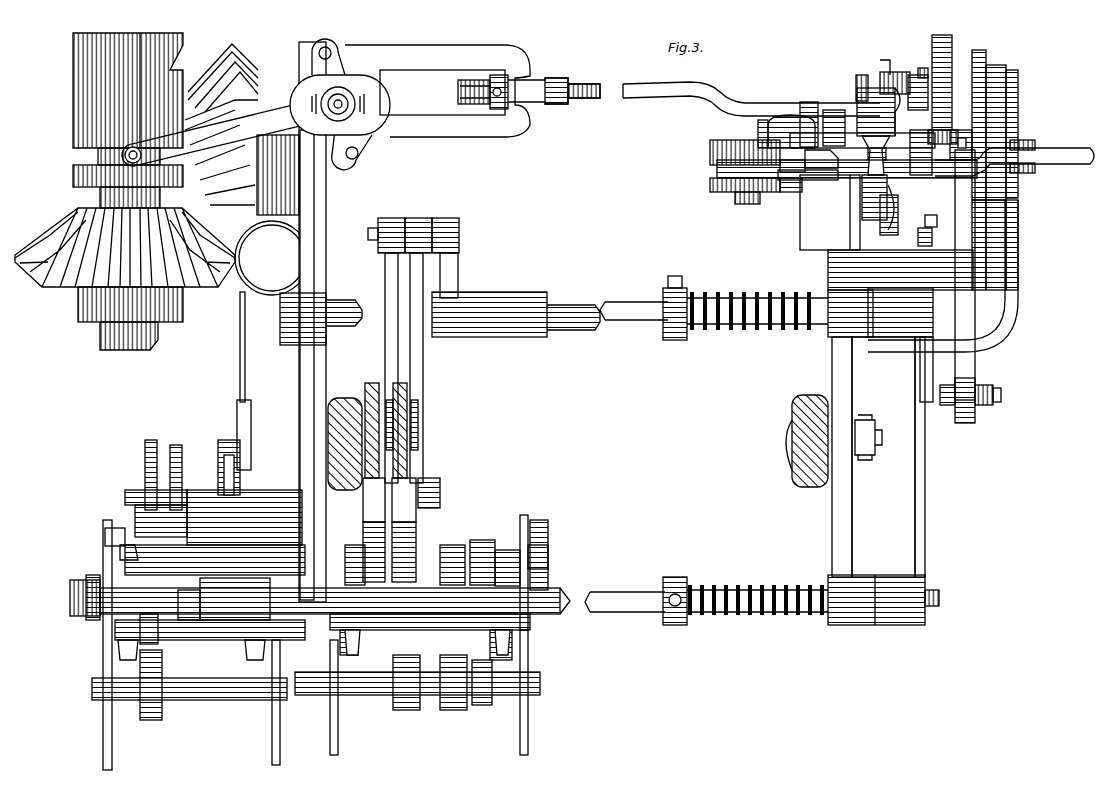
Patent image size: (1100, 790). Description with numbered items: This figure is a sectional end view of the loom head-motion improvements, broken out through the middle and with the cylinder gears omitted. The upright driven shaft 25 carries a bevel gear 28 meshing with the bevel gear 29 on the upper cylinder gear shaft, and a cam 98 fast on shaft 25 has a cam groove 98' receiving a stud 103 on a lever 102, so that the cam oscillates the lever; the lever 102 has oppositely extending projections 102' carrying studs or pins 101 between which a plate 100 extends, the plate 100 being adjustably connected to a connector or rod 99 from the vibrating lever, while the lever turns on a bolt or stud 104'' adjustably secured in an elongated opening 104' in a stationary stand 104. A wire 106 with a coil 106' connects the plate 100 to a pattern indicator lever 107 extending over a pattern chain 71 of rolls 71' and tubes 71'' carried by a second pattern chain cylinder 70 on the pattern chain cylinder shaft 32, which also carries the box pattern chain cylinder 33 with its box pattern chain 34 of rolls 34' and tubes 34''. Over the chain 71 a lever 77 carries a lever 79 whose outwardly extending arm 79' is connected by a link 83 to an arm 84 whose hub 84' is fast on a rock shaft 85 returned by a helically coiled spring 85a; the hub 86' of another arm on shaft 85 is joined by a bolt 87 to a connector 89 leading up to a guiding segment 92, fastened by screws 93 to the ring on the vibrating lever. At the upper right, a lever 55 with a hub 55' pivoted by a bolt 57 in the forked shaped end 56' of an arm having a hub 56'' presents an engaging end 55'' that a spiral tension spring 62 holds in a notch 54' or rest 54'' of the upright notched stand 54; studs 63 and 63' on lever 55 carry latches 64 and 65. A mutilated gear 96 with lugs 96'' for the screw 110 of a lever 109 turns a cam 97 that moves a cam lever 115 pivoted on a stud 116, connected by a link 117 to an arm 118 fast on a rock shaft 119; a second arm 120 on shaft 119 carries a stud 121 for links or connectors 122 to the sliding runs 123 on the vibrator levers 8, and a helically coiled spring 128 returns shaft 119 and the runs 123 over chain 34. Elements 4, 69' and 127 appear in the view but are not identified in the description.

The brake pad 4 is at (330, 445).
The vibrator lever 8 is at (366, 395).
The upright driven shaft 25 is at (103, 340).
The bevel gear 28 is at (40, 270).
The bevel gear 29 is at (228, 85).
The pattern chain cylinder shaft 32 is at (75, 596).
The box pattern chain cylinder 33 is at (528, 535).
The box pattern chain 34 is at (432, 698).
The rolls 34' is at (442, 613).
The tubes 34'' is at (417, 698).
The upright notched stand 54 is at (958, 276).
The notches 54' is at (1018, 177).
The rests 54'' is at (1029, 180).
The lever 55 is at (847, 205).
The hub 55' is at (721, 169).
The engaging end 55'' is at (1014, 156).
The forked shaped end 56' is at (712, 207).
The hub 56'' is at (786, 105).
The bolt 57 is at (782, 186).
The spiral tension spring 62 is at (806, 160).
The stud 63 is at (926, 166).
The stud 63' is at (762, 129).
The latch 64 is at (870, 166).
The latch 65 is at (820, 178).
The sleeve 69' is at (808, 199).
The second pattern chain cylinder 70 is at (105, 545).
The pattern chain 71 is at (170, 702).
The rolls 71' is at (142, 702).
The tubes 71'' is at (189, 713).
The lever 77 is at (174, 455).
The lever 79 is at (129, 462).
The outwardly extending arm 79' is at (142, 505).
The link 83 is at (90, 612).
The arm 84 is at (182, 630).
The hub 84' is at (210, 579).
The rock shaft 85 is at (540, 565).
The helically coiled spring 85a is at (760, 615).
The hub 86' is at (891, 613).
The bolt 87 is at (940, 597).
The connector 89 is at (925, 475).
The guiding segment 92 is at (828, 130).
The screws 93 is at (878, 88).
The mutilated gear 96 is at (940, 80).
The lugs or ears 96'' is at (907, 69).
The cam 97 is at (988, 56).
The cam 98 is at (109, 99).
The cam groove 98' is at (108, 186).
The connector or rod 99 is at (580, 86).
The plate 100 is at (503, 53).
The studs or pins 101 is at (330, 52).
The lever 102 is at (232, 107).
The projections 102' is at (375, 90).
The stud 103 is at (125, 160).
The stationary stand 104 is at (331, 322).
The elongated opening 104' is at (370, 116).
The bolt or stud 104'' is at (437, 92).
The wire 106 is at (221, 381).
The coil 106' is at (272, 258).
The pattern indicator lever 107 is at (226, 438).
The lever 109 is at (915, 100).
The screw 110 is at (922, 68).
The cam lever 115 is at (1012, 262).
The stud 116 is at (930, 236).
The link 117 is at (985, 398).
The arm 118 is at (922, 355).
The rock shaft 119 is at (525, 305).
The second arm 120 is at (452, 265).
The stud 121 is at (372, 233).
The links or connectors 122 is at (388, 262).
The sliding runs 123 is at (388, 350).
The collar 127 is at (1022, 140).
The helically coiled spring 128 is at (755, 330).